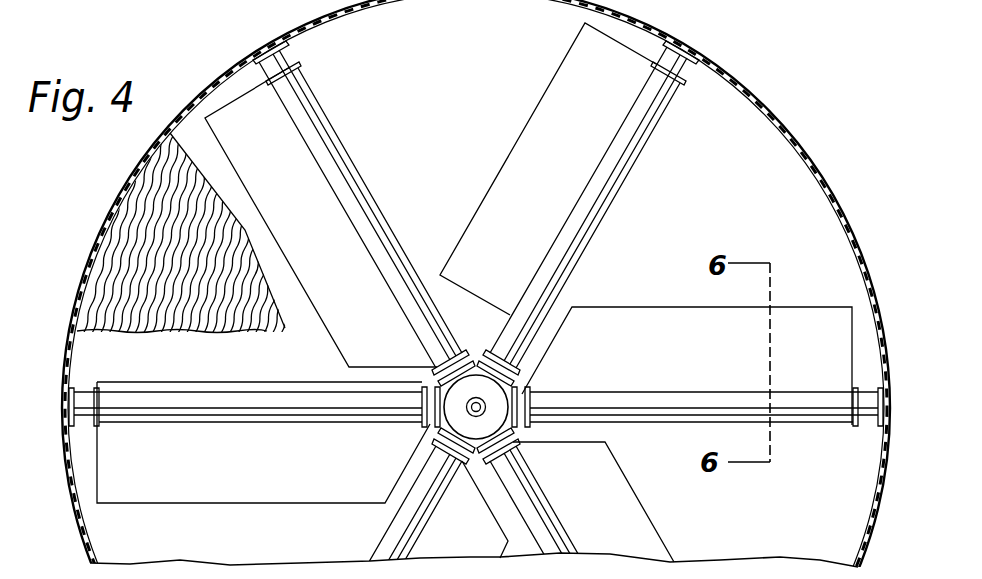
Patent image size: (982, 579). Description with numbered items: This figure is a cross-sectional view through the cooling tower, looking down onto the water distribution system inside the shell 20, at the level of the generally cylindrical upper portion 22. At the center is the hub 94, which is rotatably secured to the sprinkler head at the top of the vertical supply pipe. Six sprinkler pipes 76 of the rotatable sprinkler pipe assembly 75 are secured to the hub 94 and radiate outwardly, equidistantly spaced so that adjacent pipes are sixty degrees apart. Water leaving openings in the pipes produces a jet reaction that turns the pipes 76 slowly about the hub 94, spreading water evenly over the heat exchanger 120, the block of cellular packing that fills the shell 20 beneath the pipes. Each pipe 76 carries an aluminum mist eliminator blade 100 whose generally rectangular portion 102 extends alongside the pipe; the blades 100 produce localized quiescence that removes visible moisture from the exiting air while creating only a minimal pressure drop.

The shell 20 is at (792, 100).
The generally cylindrical upper portion 22 is at (736, 78).
The rotatable sprinkler pipe assembly 75 is at (661, 212).
The sprinkler pipe 76 is at (296, 60).
The hub 94 is at (497, 392).
The blade 100 is at (481, 153).
The generally rectangular portion 102 is at (528, 146).
The heat exchanger 120 is at (236, 205).